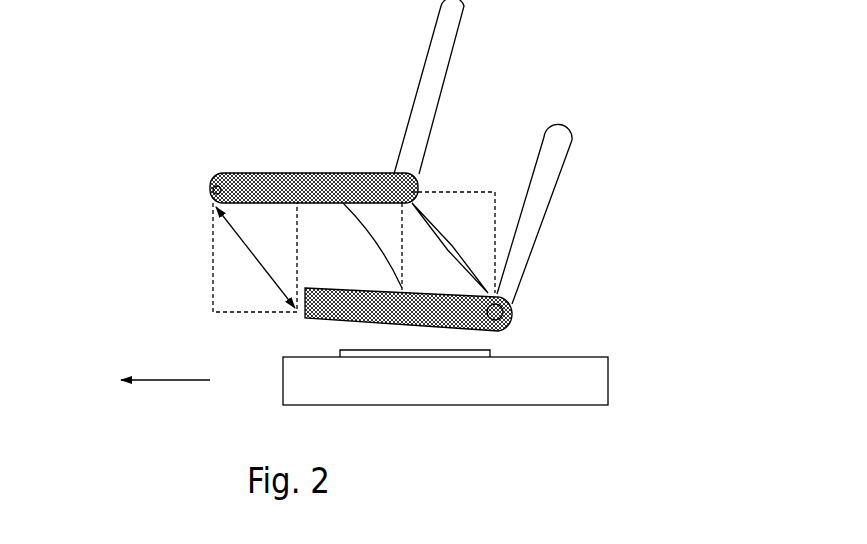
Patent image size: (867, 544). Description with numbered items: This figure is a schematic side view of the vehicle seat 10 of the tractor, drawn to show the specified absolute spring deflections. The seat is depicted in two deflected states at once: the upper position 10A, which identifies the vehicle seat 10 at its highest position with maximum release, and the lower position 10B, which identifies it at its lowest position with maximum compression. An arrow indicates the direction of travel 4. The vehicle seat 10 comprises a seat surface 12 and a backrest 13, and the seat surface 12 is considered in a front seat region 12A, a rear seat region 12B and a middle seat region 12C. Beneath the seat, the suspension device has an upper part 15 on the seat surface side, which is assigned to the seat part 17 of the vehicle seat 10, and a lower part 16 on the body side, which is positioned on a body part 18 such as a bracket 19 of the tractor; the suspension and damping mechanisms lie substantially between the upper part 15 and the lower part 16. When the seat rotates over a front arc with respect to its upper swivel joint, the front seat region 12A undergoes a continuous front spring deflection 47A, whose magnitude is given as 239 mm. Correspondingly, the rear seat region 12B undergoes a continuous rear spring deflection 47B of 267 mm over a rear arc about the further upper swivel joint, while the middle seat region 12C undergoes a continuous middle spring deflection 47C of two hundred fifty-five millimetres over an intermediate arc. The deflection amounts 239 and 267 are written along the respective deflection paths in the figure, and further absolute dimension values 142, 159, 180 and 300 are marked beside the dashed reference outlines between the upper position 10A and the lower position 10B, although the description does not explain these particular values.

The direction of travel 4 is at (167, 383).
The vehicle seat 10 is at (662, 68).
The upper position 10A is at (148, 178).
The lower position 10B is at (633, 320).
The seat surface 12 is at (250, 172).
The front seat region 12A is at (212, 164).
The rear seat cushion portion 12B is at (390, 151).
The middle seat region 12C is at (320, 159).
The backrest 13 is at (457, 22).
The upper part 15 is at (355, 173).
The lower part 16 is at (410, 350).
The seat part 17 is at (211, 190).
The body part 18 is at (603, 405).
The bracket 19 is at (553, 401).
The front spring deflection 47A is at (248, 253).
The rear spring deflection 47B is at (434, 230).
The middle spring deflection 47C is at (388, 246).
The horizontal offset dimension 142 is at (255, 270).
The rear offset dimension 159 is at (453, 231).
The vertical offset dimension 180 is at (360, 246).
The front spring deflection value 239 is at (255, 257).
The rear spring deflection value 267 is at (450, 248).
The rear support length 300 is at (534, 214).